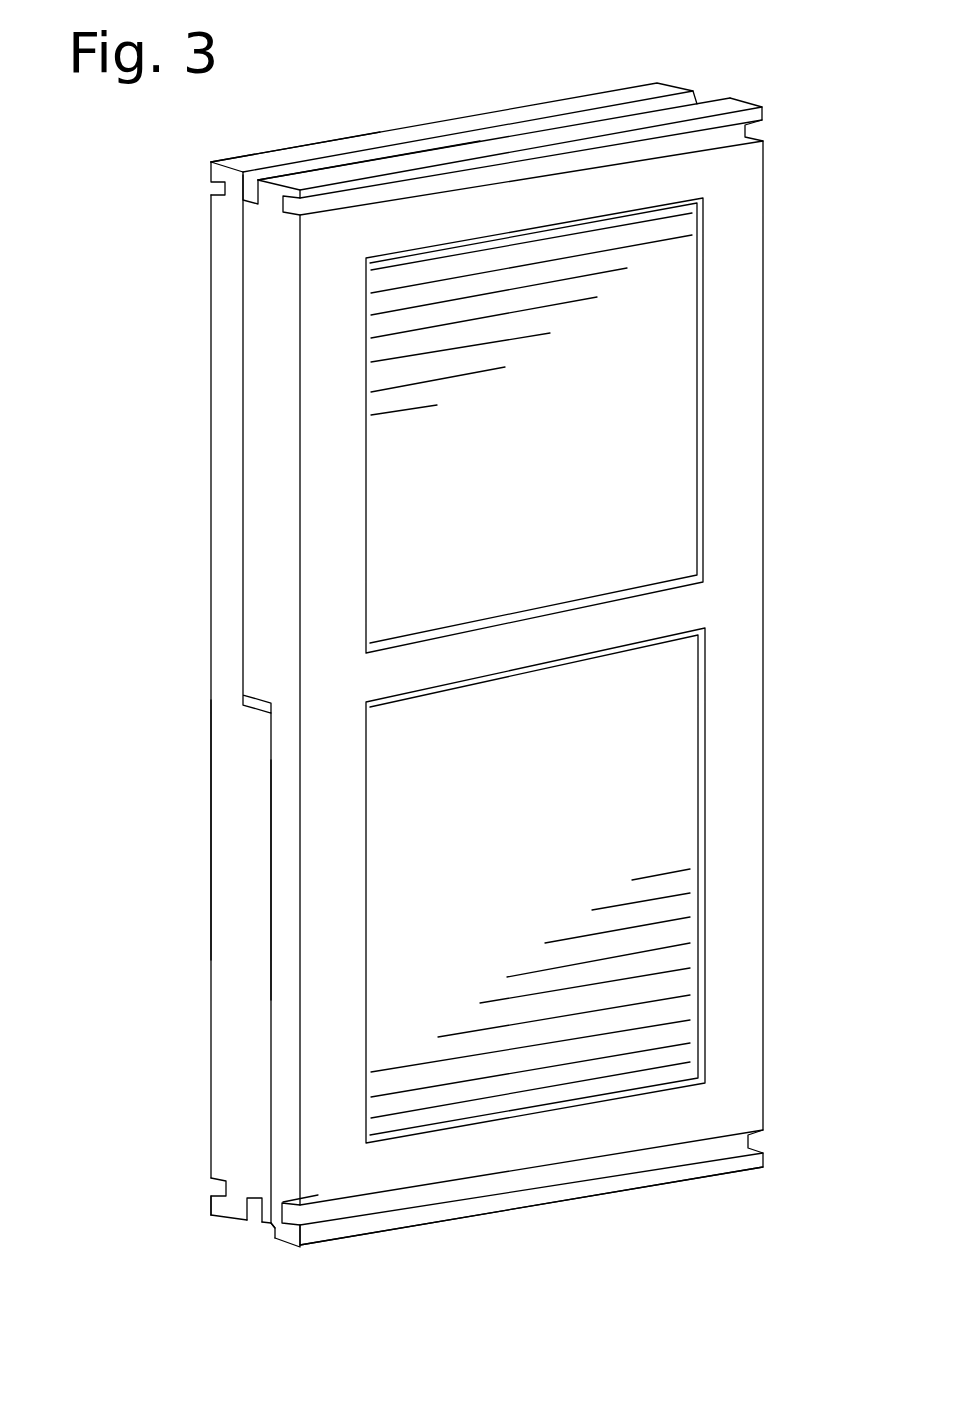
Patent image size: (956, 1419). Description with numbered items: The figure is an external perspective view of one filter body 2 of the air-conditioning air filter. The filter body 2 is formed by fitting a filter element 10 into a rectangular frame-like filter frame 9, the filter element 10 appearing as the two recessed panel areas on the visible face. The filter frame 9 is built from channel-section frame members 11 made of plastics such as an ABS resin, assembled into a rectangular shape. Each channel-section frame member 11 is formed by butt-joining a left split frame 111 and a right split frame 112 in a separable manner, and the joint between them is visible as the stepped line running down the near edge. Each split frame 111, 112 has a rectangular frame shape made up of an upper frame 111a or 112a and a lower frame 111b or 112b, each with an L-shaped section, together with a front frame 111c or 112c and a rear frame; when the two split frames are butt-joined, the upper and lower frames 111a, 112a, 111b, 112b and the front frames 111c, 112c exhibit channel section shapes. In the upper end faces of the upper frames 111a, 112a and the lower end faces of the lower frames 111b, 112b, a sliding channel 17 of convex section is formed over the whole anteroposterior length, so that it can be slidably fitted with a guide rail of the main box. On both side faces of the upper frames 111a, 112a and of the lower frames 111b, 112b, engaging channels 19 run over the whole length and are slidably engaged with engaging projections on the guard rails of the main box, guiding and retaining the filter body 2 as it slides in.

The filter body 2 is at (768, 302).
The filter frame 9 is at (212, 507).
The filter element 10 is at (646, 1038).
The channel-section frame member 11 is at (92, 318).
The sliding channel 17 is at (245, 180).
The engaging channel 19 is at (210, 185).
The left split frame 111 is at (212, 333).
The right split frame 112 is at (257, 379).
The upper frame of left split frame 111a is at (407, 130).
The upper frame of right split frame 112a is at (517, 140).
The lower frame of left split frame 111b is at (217, 1220).
The lower frame of right split frame 112b is at (287, 1250).
The front frame of left split frame 111c is at (230, 822).
The front frame of right split frame 112c is at (285, 878).